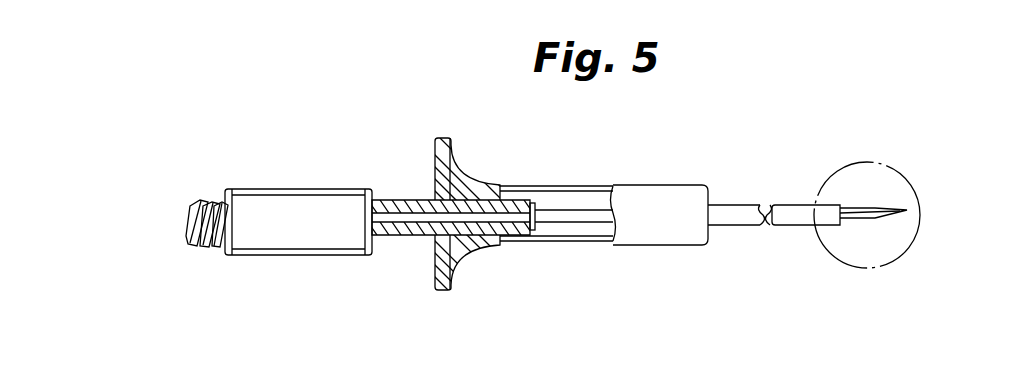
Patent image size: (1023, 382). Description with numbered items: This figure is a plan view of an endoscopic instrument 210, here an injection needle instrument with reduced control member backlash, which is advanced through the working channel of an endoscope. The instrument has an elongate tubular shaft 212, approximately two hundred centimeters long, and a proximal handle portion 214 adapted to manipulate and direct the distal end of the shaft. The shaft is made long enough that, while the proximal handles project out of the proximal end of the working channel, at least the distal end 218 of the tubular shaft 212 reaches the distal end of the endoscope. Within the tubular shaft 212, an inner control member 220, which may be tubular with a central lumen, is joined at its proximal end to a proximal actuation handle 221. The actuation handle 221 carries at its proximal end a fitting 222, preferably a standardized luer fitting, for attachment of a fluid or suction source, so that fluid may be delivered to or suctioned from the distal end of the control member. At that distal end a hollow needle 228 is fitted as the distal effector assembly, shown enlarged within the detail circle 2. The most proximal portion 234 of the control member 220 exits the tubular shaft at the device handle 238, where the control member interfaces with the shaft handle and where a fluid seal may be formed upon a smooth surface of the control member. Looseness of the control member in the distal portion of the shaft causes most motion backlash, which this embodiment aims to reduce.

The enlarged detail circle 2 is at (872, 268).
The endoscopic instrument 210 is at (684, 158).
The elongate tubular shaft 212 is at (797, 210).
The proximal handle portion 214 is at (675, 235).
The distal end 218 is at (584, 198).
The inner control member 220 is at (572, 218).
The proximal actuation handle 221 is at (308, 207).
The fitting 222 is at (205, 198).
The hollow needle 228 is at (882, 208).
The most proximal portion of the control member 234 is at (545, 216).
The device handle 238 is at (452, 150).